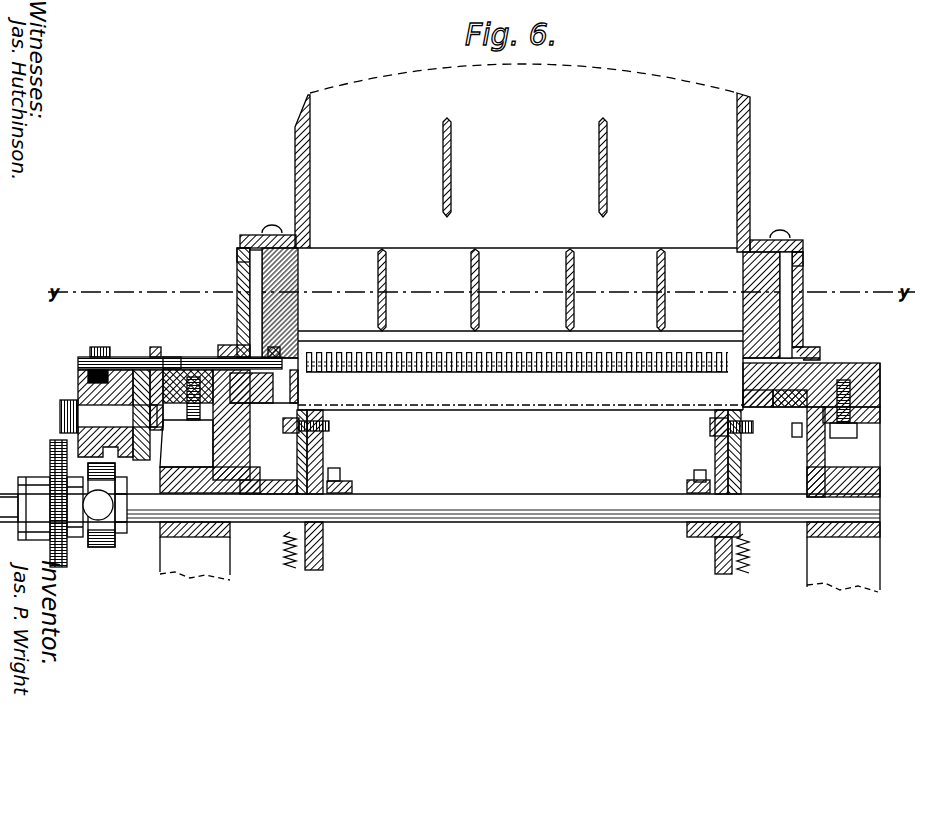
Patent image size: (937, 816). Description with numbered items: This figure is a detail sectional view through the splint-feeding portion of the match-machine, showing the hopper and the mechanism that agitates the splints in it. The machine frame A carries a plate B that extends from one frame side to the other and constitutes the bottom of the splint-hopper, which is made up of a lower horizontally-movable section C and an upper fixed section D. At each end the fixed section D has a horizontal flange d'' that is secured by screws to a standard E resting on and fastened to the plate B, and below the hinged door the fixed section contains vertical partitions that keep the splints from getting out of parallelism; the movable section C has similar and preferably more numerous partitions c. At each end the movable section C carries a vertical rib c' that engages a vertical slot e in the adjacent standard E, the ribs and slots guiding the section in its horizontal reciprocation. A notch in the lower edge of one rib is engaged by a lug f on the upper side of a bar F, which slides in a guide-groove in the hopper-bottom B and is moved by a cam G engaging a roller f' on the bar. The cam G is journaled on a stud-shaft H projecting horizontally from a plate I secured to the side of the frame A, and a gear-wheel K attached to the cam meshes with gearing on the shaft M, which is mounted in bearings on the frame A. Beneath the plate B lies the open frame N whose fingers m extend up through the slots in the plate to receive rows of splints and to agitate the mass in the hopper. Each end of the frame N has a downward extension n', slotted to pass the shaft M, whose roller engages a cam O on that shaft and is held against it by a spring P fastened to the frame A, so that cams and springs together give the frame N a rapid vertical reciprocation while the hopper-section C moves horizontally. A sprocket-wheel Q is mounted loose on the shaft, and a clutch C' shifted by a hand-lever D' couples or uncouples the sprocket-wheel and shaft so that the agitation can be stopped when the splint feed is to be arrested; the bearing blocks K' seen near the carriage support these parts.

The fixed hopper-section D is at (535, 158).
The horizontal flange d'' is at (527, 230).
The horizontally-movable hopper-section C is at (521, 303).
The partition c is at (521, 290).
The vertical rib c' is at (518, 304).
The standard or bracket E is at (237, 289).
The vertical slot e is at (240, 258).
The rack teeth m is at (423, 356).
The open bar or frame N is at (520, 384).
The bearing block K' is at (518, 388).
The plate B is at (850, 354).
The frame A is at (881, 566).
The downward extension n' is at (520, 492).
The cam O is at (330, 460).
The spring P is at (285, 556).
The shaft M is at (440, 495).
The sprocket-wheel Q is at (67, 561).
The hand-lever D' is at (119, 505).
The clutch C' is at (126, 517).
The bar F is at (182, 370).
The plate I is at (170, 368).
The roller f' is at (113, 345).
The lug f is at (200, 341).
The cam G is at (80, 386).
The stud-shaft H is at (88, 416).
The gear-wheel K is at (173, 418).